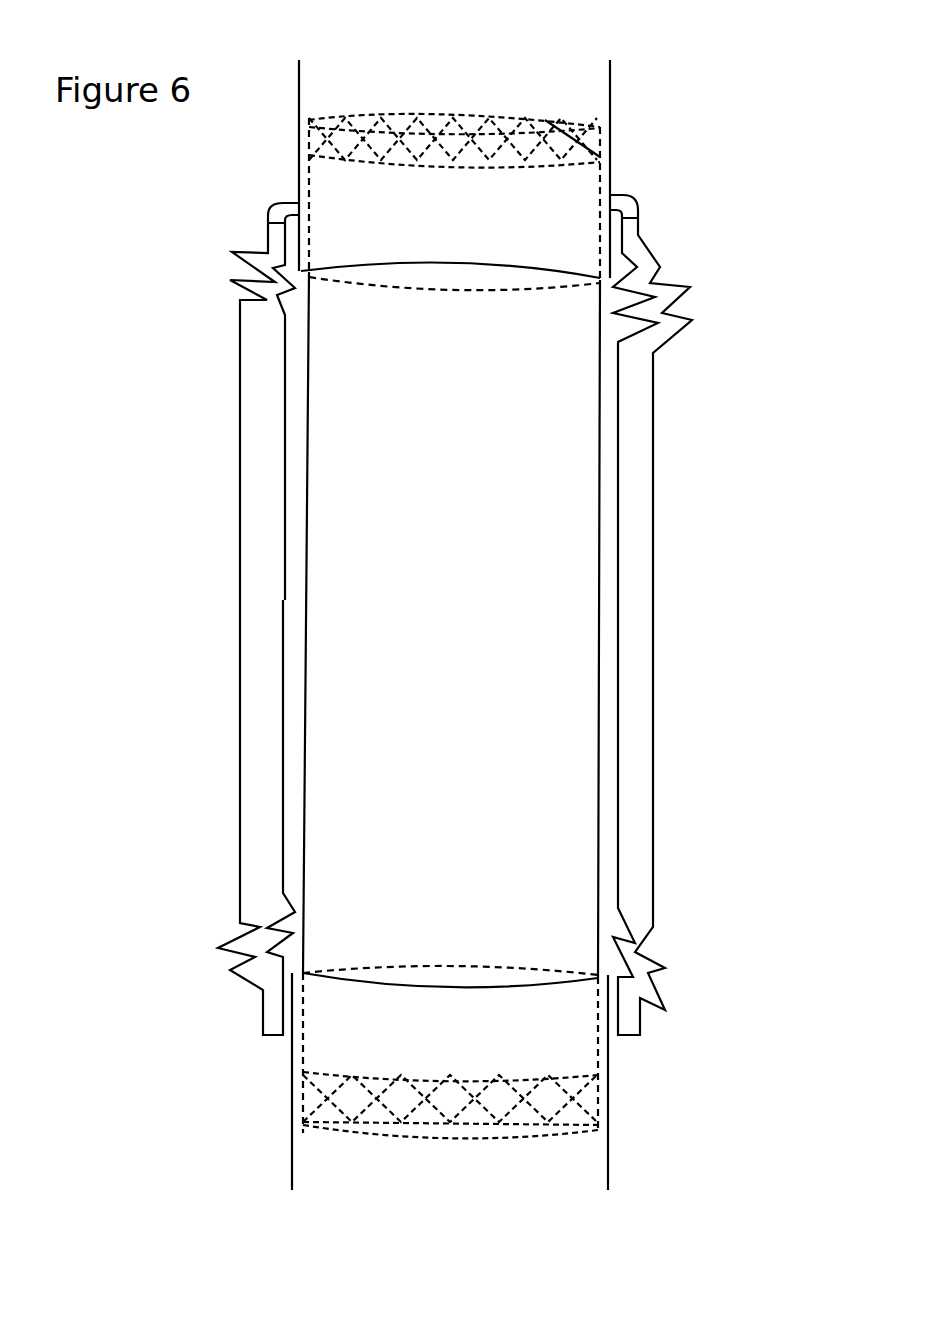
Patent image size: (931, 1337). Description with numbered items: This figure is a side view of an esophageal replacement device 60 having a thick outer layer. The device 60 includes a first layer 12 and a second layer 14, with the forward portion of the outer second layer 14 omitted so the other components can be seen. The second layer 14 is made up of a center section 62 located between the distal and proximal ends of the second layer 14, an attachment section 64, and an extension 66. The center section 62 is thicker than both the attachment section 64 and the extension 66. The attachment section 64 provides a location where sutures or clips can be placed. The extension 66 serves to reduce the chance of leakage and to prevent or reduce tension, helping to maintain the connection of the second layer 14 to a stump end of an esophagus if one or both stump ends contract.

The device 60 is at (722, 100).
The first layer 12 is at (598, 582).
The second layer 14 is at (258, 593).
The center section 62 is at (240, 348).
The attachment section 64 is at (632, 228).
The extension 66 is at (232, 252).